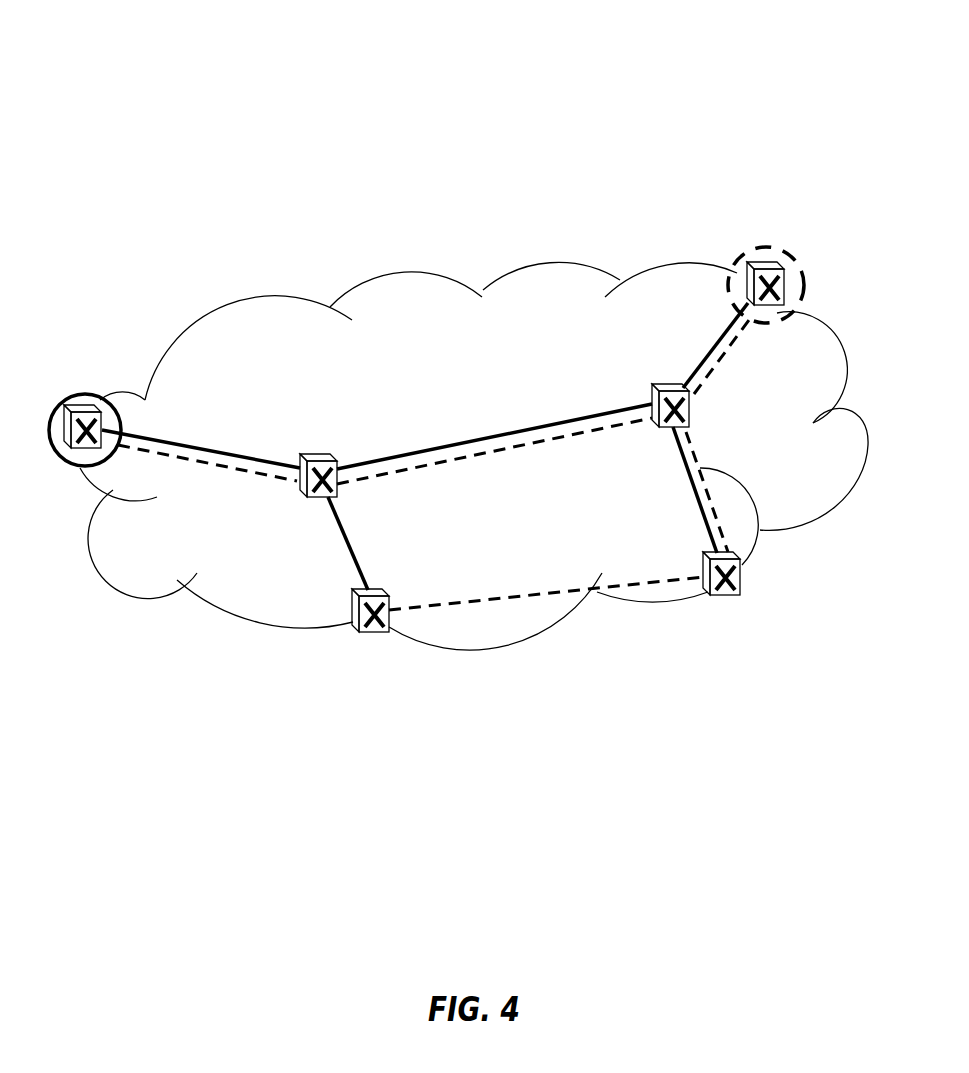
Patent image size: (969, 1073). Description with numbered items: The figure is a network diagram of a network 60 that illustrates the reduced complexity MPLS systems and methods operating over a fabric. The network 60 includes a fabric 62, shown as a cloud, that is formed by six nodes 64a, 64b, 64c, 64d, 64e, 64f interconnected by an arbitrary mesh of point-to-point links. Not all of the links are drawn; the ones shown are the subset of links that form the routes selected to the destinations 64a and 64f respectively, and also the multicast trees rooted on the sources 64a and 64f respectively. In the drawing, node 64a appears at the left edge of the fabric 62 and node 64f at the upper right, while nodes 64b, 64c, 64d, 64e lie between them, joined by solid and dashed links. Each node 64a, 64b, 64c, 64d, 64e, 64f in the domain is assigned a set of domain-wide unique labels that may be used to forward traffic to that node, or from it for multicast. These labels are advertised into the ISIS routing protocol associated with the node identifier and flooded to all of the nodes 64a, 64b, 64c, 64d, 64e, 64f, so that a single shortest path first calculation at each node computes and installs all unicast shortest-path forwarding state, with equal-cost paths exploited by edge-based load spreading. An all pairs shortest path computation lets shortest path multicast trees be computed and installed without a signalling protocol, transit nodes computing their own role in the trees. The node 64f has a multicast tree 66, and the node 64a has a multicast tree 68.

The network 60 is at (504, 64).
The fabric 62 is at (572, 262).
The node 64a is at (79, 393).
The node 64b is at (322, 454).
The node 64c is at (365, 632).
The node 64d is at (717, 596).
The node 64e is at (654, 427).
The node 64f is at (775, 262).
The multicast tree 66 is at (698, 458).
The multicast tree 68 is at (342, 532).